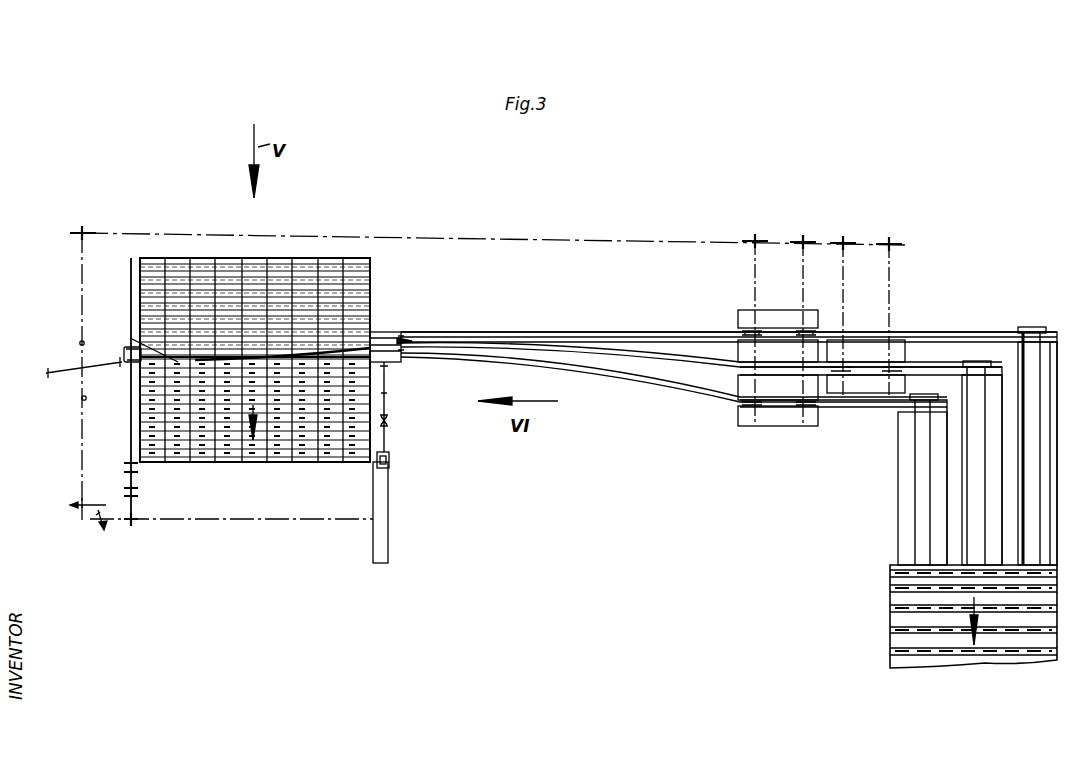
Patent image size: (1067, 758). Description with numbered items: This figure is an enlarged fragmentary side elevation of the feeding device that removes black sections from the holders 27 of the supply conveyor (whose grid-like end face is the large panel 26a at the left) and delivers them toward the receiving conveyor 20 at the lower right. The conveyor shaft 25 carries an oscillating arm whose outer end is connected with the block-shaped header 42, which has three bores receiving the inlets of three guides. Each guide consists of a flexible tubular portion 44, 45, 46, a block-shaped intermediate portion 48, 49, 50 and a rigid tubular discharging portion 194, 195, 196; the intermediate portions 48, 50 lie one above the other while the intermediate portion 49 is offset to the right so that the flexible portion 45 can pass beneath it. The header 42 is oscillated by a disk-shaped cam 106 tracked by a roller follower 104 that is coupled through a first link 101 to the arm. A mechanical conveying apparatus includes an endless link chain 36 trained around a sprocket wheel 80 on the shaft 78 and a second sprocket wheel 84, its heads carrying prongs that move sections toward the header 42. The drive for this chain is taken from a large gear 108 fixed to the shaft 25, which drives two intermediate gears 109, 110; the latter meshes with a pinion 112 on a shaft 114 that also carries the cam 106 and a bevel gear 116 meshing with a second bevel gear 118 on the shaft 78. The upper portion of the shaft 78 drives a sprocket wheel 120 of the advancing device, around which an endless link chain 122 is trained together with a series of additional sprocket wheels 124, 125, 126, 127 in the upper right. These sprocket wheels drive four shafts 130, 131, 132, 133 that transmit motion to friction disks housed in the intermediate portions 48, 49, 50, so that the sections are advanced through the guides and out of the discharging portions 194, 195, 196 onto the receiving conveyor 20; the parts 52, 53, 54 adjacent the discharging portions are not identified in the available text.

The receiving conveyor 20 is at (890, 598).
The shaft 25 is at (124, 353).
The grid panel 26a is at (372, 261).
The holder 27 is at (370, 302).
The endless link chain 36 is at (131, 338).
The header 42 is at (380, 332).
The flexible tubular portion 44 is at (510, 325).
The flexible tubular portion 45 is at (548, 325).
The flexible tubular portion 46 is at (510, 358).
The block-shaped intermediate portion 48 is at (738, 316).
The block-shaped intermediate portion 49 is at (891, 342).
The block-shaped intermediate portion 50 is at (800, 417).
The first slide 52 is at (1030, 399).
The second slide 53 is at (965, 430).
The third slide 54 is at (922, 486).
The shaft 78 is at (82, 272).
The sprocket wheel 80 is at (82, 373).
The second sprocket wheel 84 is at (402, 338).
The first link 101 is at (386, 404).
The roller follower 104 is at (389, 468).
The cam 106 is at (380, 507).
The large gear 108 is at (131, 420).
The intermediate gear 109 is at (138, 472).
The intermediate gear 110 is at (138, 494).
The pinion 112 is at (135, 524).
The shaft 114 is at (214, 520).
The bevel gear 116 is at (98, 531).
The second bevel gear 118 is at (82, 500).
The sprocket wheel 120 is at (101, 218).
The endless link chain 122 is at (682, 238).
The sprocket wheel 124 is at (757, 241).
The sprocket wheel 125 is at (805, 242).
The sprocket wheel 126 is at (844, 243).
The sprocket wheel 127 is at (890, 244).
The shaft 130 is at (756, 300).
The shaft 131 is at (804, 300).
The shaft 132 is at (844, 300).
The shaft 133 is at (890, 300).
The rigid tubular discharging portion 194 is at (993, 310).
The rigid tubular discharging portion 195 is at (915, 368).
The rigid tubular discharging portion 196 is at (885, 408).